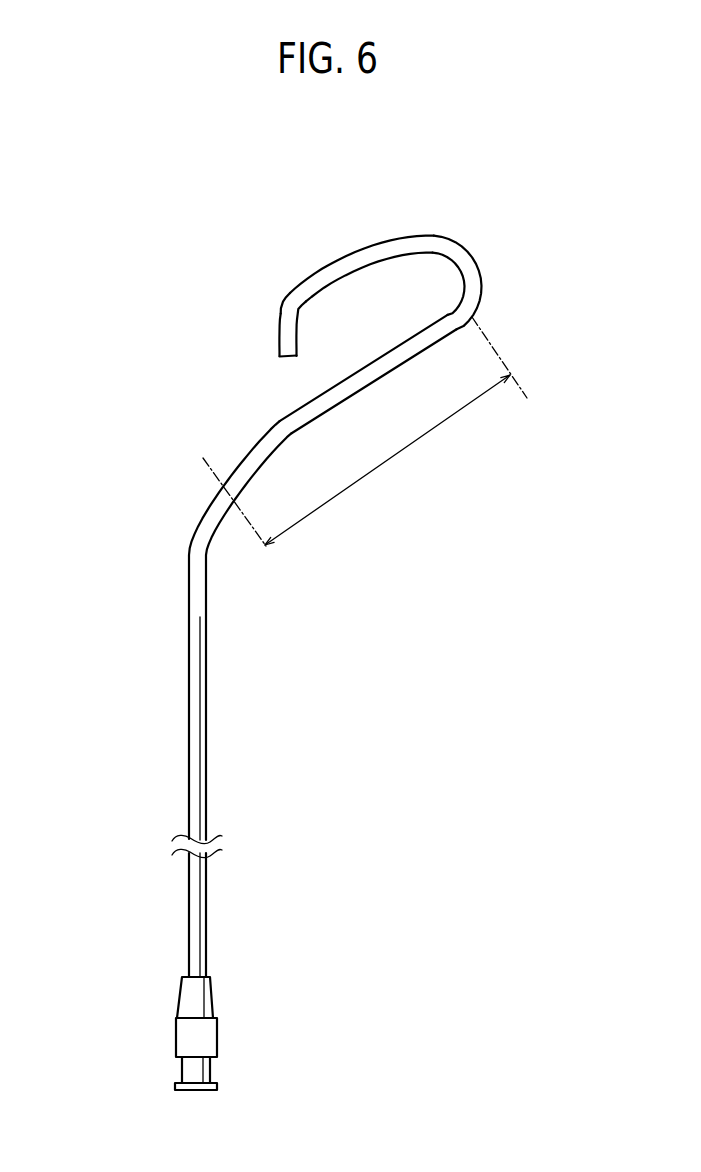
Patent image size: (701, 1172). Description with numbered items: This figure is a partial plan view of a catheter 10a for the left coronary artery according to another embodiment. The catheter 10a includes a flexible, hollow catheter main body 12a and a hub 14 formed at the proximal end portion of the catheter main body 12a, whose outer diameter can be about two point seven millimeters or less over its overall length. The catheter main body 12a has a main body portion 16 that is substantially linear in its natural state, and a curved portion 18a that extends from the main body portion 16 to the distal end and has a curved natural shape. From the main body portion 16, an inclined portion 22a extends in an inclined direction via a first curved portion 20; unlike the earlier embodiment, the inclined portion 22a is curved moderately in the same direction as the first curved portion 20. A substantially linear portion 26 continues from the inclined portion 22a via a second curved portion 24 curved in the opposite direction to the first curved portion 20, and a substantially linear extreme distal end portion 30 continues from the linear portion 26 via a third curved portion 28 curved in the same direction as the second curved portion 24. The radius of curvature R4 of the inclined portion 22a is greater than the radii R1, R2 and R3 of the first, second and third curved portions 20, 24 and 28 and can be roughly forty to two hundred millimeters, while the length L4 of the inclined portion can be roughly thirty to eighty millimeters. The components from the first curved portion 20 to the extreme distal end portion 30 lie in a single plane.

The catheter 10a is at (466, 171).
The catheter main body 12a is at (222, 702).
The hub 14 is at (198, 1004).
The main body portion 16 is at (101, 979).
The curved portion 18a is at (100, 231).
The first curved portion 20 is at (207, 549).
The inclined portion 22a is at (480, 348).
The second curved portion 24 is at (473, 274).
The substantially linear portion 26 is at (428, 226).
The third curved portion 28 is at (284, 302).
The extreme distal end portion 30 is at (262, 333).
The radius of curvature of first curved portion R1 is at (217, 534).
The radius of curvature of second curved portion R2 is at (463, 278).
The radius of curvature of third curved portion R3 is at (300, 310).
The radius of curvature of inclined portion R4 is at (315, 420).
The length of inclined portion L4 is at (387, 460).